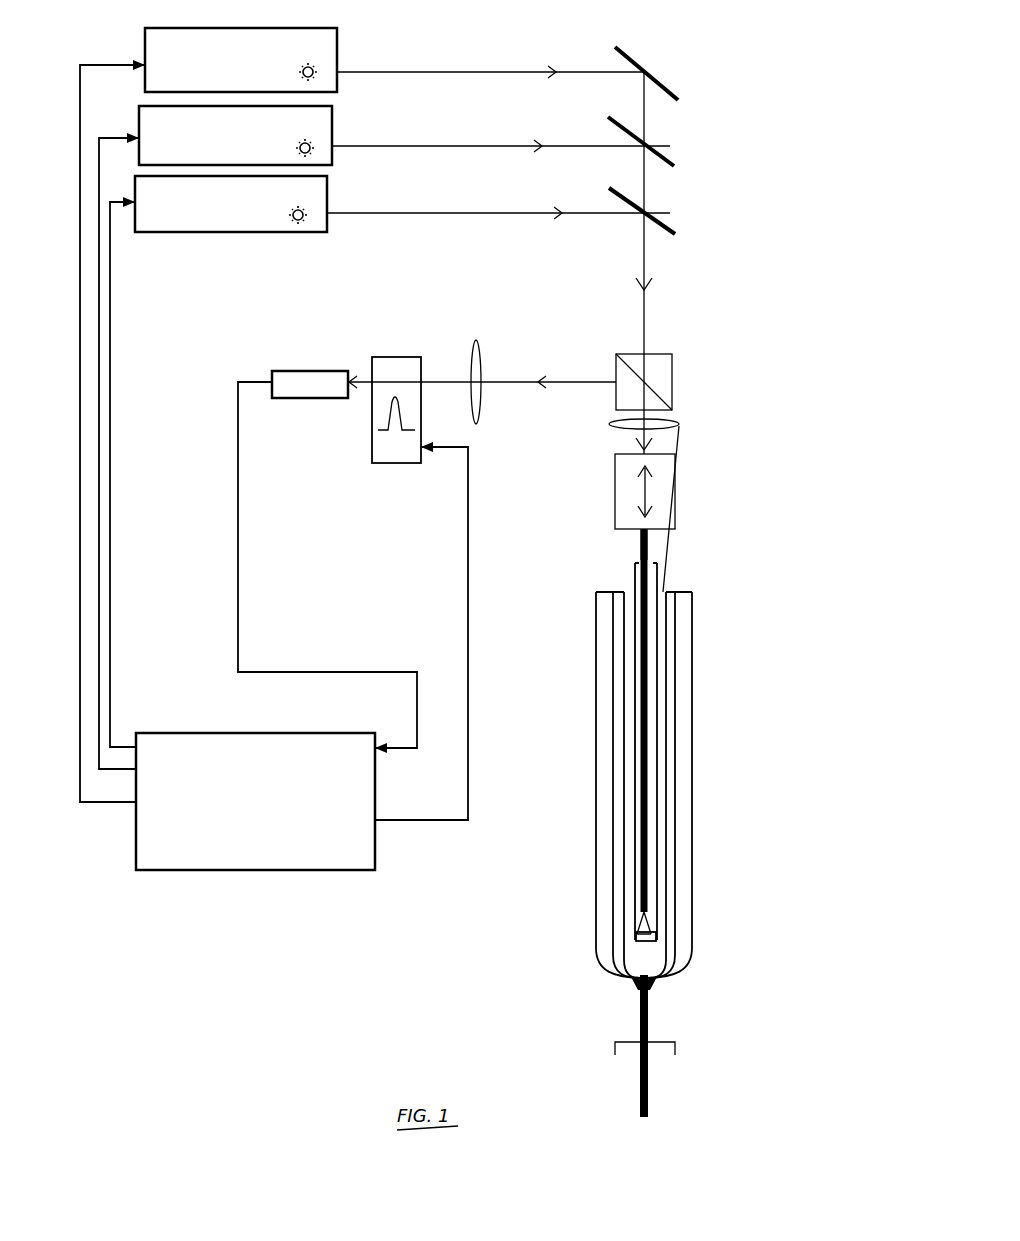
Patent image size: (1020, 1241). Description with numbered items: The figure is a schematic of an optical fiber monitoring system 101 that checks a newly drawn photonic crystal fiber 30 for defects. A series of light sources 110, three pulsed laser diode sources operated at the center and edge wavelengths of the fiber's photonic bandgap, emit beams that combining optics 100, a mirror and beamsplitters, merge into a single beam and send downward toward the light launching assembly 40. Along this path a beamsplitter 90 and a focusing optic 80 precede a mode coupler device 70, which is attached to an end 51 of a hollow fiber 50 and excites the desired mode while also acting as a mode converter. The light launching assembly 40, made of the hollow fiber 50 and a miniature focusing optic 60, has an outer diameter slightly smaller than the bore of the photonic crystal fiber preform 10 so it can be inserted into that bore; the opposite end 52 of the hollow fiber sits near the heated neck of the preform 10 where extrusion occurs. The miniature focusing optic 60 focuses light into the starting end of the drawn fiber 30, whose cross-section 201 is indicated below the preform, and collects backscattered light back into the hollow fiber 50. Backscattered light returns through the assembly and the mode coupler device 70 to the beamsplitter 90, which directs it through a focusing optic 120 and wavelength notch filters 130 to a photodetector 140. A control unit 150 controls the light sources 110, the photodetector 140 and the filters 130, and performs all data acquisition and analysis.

The photonic crystal fiber preform 10 is at (694, 825).
The photonic crystal fiber 30 is at (655, 1090).
The light launching assembly 40 is at (660, 575).
The hollow fiber 50 is at (643, 872).
The end of hollow fiber 51 is at (643, 532).
The opposite end of hollow fiber 52 is at (645, 912).
The miniature focusing optic 60 is at (657, 937).
The mode coupler device 70 is at (677, 485).
The focusing optic 80 is at (683, 422).
The beamsplitter 90 is at (672, 380).
The combining optics 100 is at (673, 217).
The optical fiber monitoring system 101 is at (136, 946).
The light sources 110 is at (236, 23).
The focusing optic 120 is at (492, 331).
The wavelength notch filters 130 is at (397, 463).
The photodetector 140 is at (307, 351).
The control unit 150 is at (262, 824).
The cross-section of photonic crystal fiber 201 is at (620, 1084).